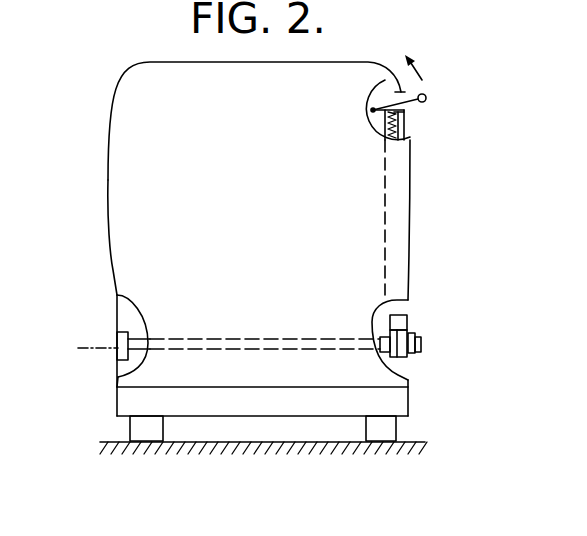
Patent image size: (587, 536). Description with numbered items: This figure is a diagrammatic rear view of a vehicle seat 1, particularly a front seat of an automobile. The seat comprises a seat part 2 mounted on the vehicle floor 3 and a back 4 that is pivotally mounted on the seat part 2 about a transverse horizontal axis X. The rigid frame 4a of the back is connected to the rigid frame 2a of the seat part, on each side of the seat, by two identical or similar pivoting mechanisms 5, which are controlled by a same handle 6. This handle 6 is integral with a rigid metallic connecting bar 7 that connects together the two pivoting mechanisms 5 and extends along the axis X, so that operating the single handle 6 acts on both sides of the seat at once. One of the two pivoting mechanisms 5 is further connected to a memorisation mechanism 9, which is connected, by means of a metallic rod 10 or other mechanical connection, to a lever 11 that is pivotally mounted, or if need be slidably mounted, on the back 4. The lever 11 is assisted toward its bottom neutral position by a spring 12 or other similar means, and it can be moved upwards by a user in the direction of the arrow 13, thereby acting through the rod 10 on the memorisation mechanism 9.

The vehicle seat 1 is at (100, 133).
The seat part 2 is at (141, 405).
The rigid frame of the seat part 2a is at (128, 372).
The vehicle floor 3 is at (225, 443).
The back 4 is at (254, 159).
The rigid frame of the back 4a is at (116, 310).
The pivoting mechanisms 5 is at (117, 338).
The handle 6 is at (422, 345).
The connecting bar 7 is at (281, 343).
The memorisation mechanism 9 is at (395, 351).
The metallic rod 10 is at (385, 121).
The lever 11 is at (414, 105).
The spring 12 is at (390, 115).
The arrow 13 is at (431, 55).
The transverse horizontal axis X is at (94, 366).